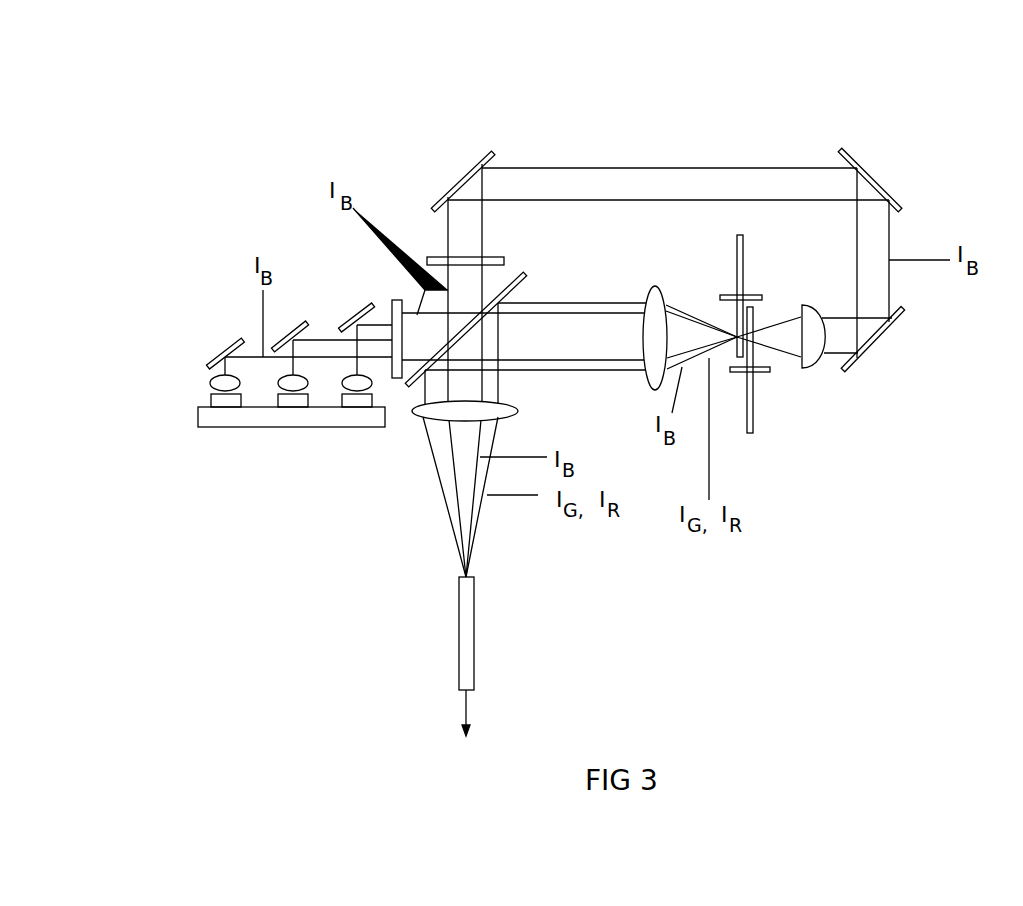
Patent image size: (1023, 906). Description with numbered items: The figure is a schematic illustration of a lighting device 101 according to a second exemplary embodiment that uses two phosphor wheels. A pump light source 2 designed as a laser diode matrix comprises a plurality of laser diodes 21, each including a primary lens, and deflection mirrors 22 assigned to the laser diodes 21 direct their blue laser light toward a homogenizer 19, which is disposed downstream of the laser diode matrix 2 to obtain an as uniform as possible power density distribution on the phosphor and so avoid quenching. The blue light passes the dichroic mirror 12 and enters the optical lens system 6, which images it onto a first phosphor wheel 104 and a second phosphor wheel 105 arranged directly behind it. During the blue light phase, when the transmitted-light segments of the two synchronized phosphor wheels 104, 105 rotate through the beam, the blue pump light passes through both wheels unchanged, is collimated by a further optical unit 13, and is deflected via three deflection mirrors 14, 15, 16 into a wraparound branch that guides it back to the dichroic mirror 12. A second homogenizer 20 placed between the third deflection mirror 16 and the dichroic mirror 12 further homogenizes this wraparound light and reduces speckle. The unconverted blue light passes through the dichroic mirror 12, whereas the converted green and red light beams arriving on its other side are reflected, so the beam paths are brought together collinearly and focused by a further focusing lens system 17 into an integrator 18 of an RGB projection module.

The lighting device 101 is at (752, 107).
The pump light source 2 is at (283, 442).
The laser diodes 21 is at (192, 384).
The deflection mirrors 22 is at (238, 340).
The homogenizer 19 is at (397, 300).
The second homogenizer 20 is at (428, 258).
The third deflection mirror 16 is at (465, 178).
The deflection mirror 15 is at (877, 177).
The deflection mirror 14 is at (882, 340).
The dichroic mirror 12 is at (525, 283).
The optical lens system 6 is at (656, 287).
The first phosphor wheel 104 is at (742, 253).
The second phosphor wheel 105 is at (753, 427).
The further optical unit 13 is at (810, 368).
The further focusing lens system 17 is at (518, 410).
The integrator 18 is at (474, 669).